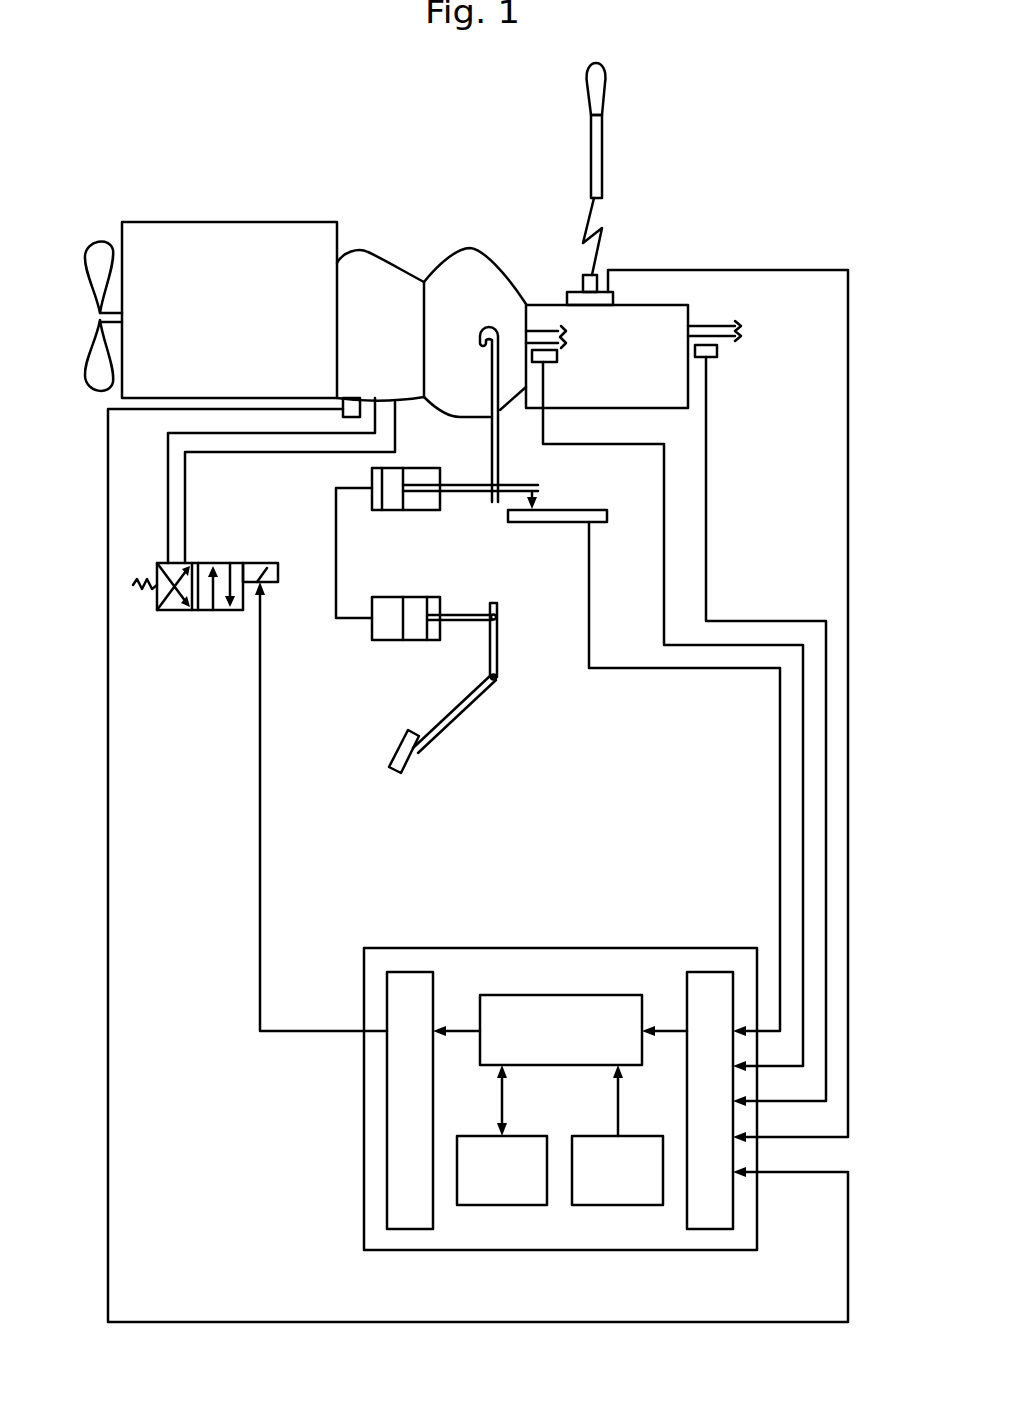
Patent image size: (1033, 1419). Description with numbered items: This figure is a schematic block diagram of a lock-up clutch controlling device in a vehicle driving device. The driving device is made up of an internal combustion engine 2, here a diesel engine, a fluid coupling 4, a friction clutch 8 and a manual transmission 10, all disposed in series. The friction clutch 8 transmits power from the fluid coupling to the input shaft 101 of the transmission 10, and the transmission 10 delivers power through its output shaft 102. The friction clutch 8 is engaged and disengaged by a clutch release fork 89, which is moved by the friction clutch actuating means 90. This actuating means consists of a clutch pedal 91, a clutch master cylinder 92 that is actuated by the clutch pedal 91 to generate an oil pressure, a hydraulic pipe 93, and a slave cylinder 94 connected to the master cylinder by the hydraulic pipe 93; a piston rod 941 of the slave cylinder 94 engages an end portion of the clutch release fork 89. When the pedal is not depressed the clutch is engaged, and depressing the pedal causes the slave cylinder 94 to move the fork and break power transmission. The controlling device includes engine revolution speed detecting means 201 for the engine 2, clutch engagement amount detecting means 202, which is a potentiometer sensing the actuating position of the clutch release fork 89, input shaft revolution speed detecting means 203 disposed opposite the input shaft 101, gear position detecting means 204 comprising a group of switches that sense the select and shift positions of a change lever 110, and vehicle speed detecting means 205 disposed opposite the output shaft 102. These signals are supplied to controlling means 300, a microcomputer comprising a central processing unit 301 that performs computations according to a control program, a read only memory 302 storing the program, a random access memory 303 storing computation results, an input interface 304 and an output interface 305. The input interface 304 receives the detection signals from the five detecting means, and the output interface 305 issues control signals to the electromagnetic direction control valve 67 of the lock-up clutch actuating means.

The internal combustion engine 2 is at (224, 219).
The fluid coupling 4 is at (374, 255).
The friction clutch 8 is at (457, 248).
The manual transmission 10 is at (548, 298).
The input shaft 101 is at (537, 330).
The output shaft 102 is at (712, 325).
The change lever 110 is at (605, 75).
The engine revolution speed detecting means 201 is at (348, 396).
The clutch engagement amount detecting means 202 is at (523, 524).
The input shaft revolution speed detecting means 203 is at (557, 355).
The gear position detecting means 204 is at (602, 293).
The vehicle speed detecting means 205 is at (718, 352).
The clutch release fork 89 is at (496, 375).
The friction clutch actuating means 90 is at (354, 681).
The clutch pedal 91 is at (457, 722).
The clutch master cylinder 92 is at (424, 590).
The hydraulic pipe 93 is at (336, 518).
The slave cylinder 94 is at (414, 516).
The piston rod 941 is at (464, 494).
The electromagnetic direction control valve 67 is at (190, 613).
The controlling means 300 is at (492, 941).
The central processing unit 301 is at (588, 993).
The read only memory 302 is at (628, 1207).
The random access memory 303 is at (503, 1207).
The input interface 304 is at (712, 970).
The output interface 305 is at (404, 970).